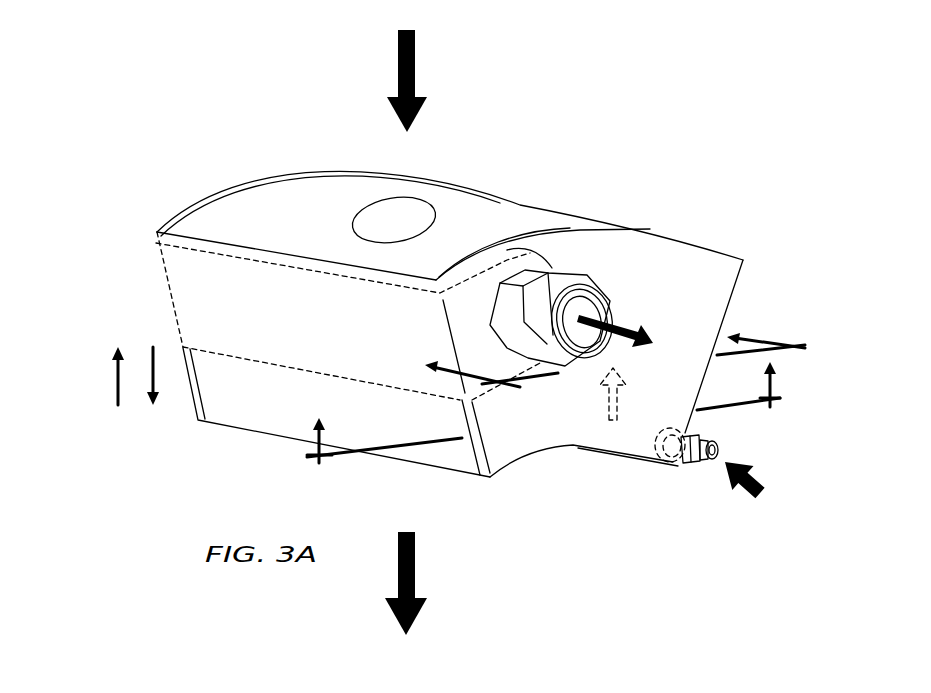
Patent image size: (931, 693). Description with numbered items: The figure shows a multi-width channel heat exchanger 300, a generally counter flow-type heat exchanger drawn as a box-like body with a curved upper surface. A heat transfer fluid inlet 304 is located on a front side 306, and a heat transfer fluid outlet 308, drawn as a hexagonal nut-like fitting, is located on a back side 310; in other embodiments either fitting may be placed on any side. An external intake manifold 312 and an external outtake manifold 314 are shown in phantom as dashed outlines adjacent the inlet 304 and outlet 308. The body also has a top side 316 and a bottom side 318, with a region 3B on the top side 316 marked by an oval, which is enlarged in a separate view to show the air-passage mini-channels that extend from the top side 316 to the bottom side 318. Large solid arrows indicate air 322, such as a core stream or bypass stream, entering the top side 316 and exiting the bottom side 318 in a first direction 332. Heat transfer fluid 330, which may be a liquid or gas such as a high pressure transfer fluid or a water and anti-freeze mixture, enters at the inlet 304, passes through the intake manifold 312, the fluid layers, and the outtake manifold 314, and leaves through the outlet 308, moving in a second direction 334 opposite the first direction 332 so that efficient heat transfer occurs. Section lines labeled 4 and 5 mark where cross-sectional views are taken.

The multi-width channel heat exchanger 300 is at (207, 127).
The heat transfer fluid inlet 304 is at (701, 464).
The front side 306 is at (750, 291).
The heat transfer fluid outlet 308 is at (567, 277).
The back side 310 is at (143, 316).
The external intake manifold 312 is at (687, 465).
The external outtake manifold 314 is at (507, 262).
The top side 316 is at (684, 217).
The bottom side 318 is at (528, 482).
The air 322 is at (413, 62).
The heat transfer fluid 330 is at (620, 330).
The first direction 332 is at (157, 377).
The second direction 334 is at (117, 382).
The region 3B is at (432, 206).
The section line 4- 4 is at (621, 369).
The section line 5- 5 is at (543, 428).